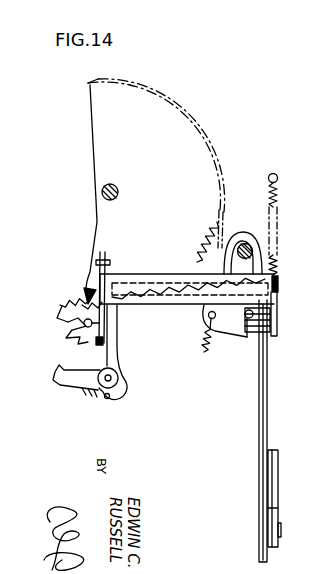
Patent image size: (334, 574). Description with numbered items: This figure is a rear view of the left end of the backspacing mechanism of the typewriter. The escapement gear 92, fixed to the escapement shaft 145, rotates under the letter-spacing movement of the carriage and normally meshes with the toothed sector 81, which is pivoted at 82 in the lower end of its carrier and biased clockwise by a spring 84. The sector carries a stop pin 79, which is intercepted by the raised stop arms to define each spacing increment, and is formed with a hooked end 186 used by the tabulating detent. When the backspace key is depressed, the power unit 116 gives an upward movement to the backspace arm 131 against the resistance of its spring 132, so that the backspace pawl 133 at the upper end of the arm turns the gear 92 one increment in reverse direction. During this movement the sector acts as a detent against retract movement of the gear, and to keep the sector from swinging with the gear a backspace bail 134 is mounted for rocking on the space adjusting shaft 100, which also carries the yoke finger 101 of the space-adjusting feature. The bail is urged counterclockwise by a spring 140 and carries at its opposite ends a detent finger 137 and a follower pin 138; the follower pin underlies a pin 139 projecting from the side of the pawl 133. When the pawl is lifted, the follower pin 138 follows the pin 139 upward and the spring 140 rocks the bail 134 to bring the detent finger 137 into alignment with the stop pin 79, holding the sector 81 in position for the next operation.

The stop pin 79 is at (63, 312).
The sector 81 is at (124, 362).
The pivot 82 is at (118, 380).
The spring 84 is at (97, 397).
The gear 92 is at (212, 184).
The space adjusting shaft 100 is at (86, 287).
The yoke finger 101 is at (109, 254).
The power unit 116 is at (285, 493).
The backspace arm 131 is at (268, 408).
The spring 132 is at (204, 358).
The backspace pawl 133 is at (237, 233).
The backspace bail 134 is at (186, 305).
The detent finger 137 is at (96, 343).
The follower pin 138 is at (244, 335).
The pin 139 is at (278, 317).
The spring 140 is at (280, 190).
The escapement shaft 145 is at (117, 186).
The hooked end 186 is at (68, 338).